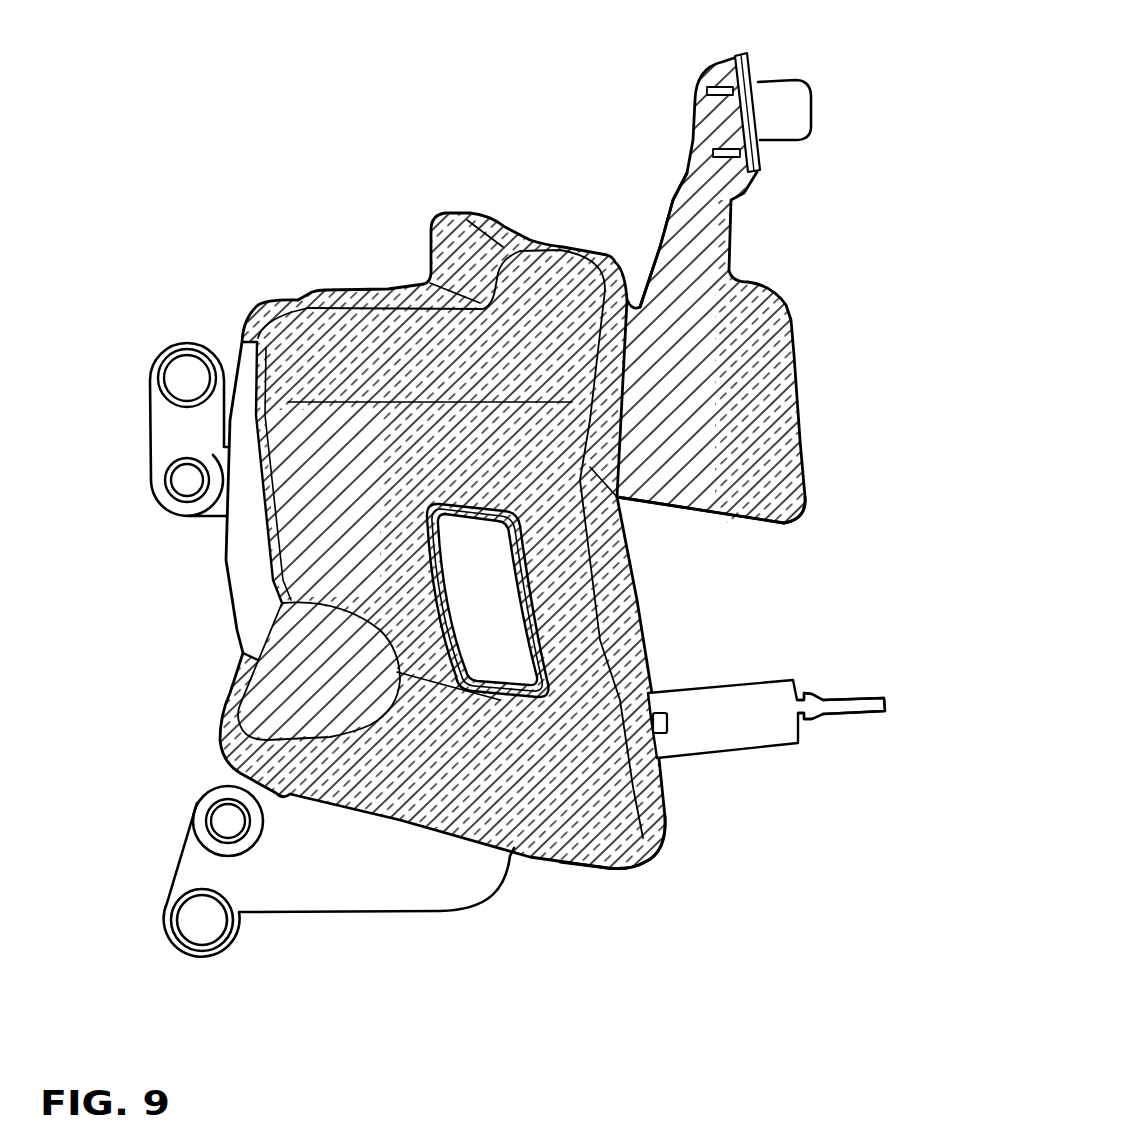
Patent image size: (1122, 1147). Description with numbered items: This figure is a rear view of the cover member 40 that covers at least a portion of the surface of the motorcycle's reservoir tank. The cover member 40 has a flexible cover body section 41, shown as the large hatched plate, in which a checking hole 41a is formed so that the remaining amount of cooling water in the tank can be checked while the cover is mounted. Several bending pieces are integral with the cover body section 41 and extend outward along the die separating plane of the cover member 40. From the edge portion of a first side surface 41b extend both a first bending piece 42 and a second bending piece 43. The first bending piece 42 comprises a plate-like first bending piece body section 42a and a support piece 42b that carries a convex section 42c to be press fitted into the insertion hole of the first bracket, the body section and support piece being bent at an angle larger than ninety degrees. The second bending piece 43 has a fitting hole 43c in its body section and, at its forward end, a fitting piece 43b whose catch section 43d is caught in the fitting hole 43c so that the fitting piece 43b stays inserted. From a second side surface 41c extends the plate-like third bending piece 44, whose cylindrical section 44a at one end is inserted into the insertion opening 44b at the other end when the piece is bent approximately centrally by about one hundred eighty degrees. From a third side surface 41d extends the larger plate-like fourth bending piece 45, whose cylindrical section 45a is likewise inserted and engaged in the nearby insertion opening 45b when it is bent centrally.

The cover member 40 is at (504, 138).
The cover body section 41 is at (556, 243).
The checking hole 41a is at (499, 702).
The first side surface 41b is at (649, 646).
The second side surface 41c is at (243, 575).
The third side surface 41d is at (585, 875).
The first bending piece 42 is at (800, 354).
The first bending piece body section 42a is at (743, 521).
The support piece 42b is at (671, 207).
The convex section 42c is at (784, 88).
The second bending piece 43 is at (768, 762).
The fitting piece 43b is at (860, 717).
The fitting hole 43c is at (664, 738).
The catch section 43d is at (810, 692).
The third bending piece 44 is at (145, 414).
The cylindrical section 44a is at (165, 480).
The insertion opening 44b is at (187, 353).
The fourth bending piece 45 is at (351, 918).
The cylindrical section 45a is at (203, 806).
The insertion opening 45b is at (200, 944).